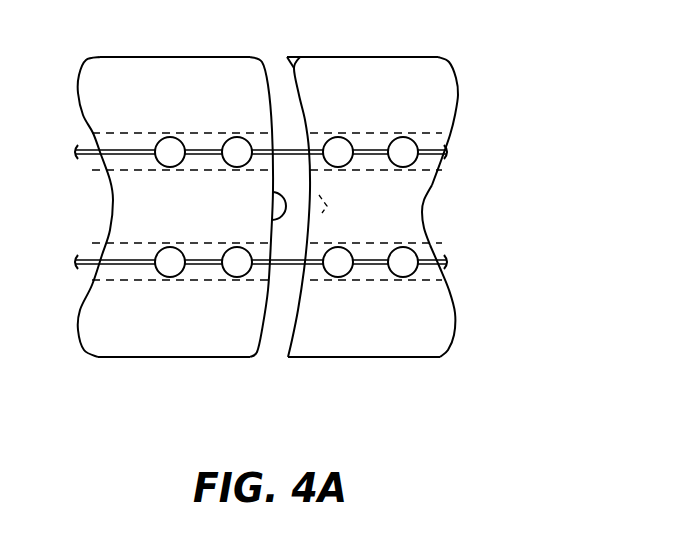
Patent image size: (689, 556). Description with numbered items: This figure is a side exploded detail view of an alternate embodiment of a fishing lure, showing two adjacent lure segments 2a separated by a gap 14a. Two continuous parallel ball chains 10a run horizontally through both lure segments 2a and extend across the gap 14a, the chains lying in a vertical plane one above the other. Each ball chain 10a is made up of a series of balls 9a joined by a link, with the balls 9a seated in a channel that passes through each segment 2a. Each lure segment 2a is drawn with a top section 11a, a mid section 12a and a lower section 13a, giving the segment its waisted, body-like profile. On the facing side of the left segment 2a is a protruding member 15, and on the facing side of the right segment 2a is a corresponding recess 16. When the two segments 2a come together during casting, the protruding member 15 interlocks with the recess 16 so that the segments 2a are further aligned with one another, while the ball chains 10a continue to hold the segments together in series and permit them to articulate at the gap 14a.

The lure segment 2a is at (130, 358).
The anchoring element 9a is at (167, 136).
The continuous parallel ball chain 10a is at (440, 156).
The top section 11a is at (455, 115).
The mid section 12a is at (422, 207).
The lower section 13a is at (453, 338).
The gap 14a is at (287, 108).
The protruding member 15 is at (283, 220).
The recess 16 is at (323, 210).